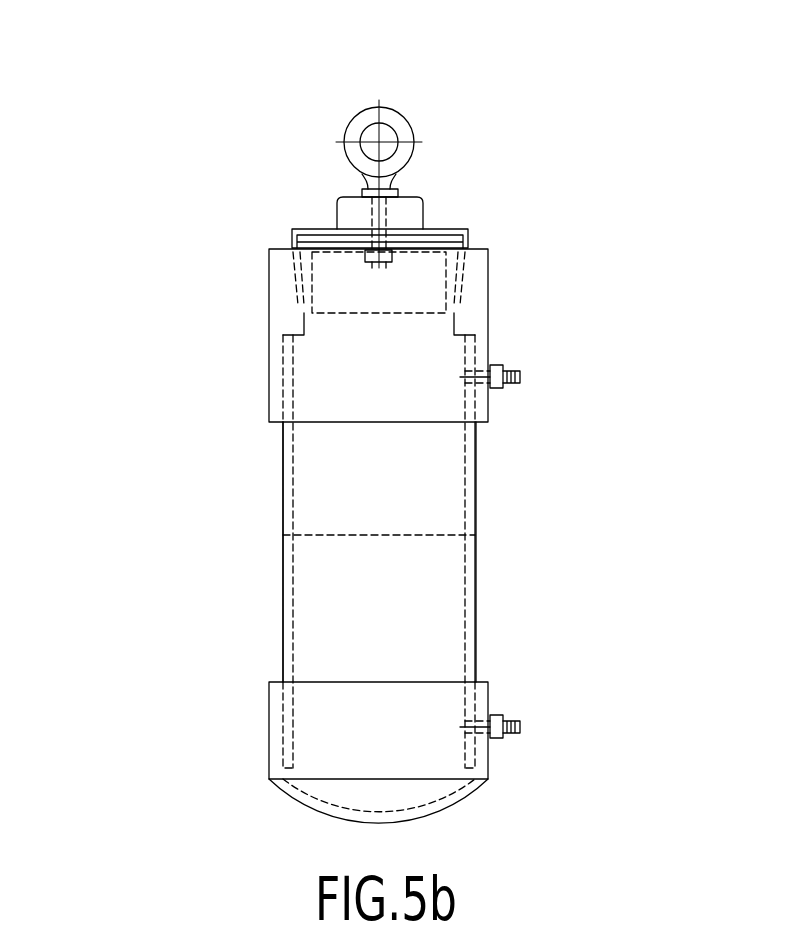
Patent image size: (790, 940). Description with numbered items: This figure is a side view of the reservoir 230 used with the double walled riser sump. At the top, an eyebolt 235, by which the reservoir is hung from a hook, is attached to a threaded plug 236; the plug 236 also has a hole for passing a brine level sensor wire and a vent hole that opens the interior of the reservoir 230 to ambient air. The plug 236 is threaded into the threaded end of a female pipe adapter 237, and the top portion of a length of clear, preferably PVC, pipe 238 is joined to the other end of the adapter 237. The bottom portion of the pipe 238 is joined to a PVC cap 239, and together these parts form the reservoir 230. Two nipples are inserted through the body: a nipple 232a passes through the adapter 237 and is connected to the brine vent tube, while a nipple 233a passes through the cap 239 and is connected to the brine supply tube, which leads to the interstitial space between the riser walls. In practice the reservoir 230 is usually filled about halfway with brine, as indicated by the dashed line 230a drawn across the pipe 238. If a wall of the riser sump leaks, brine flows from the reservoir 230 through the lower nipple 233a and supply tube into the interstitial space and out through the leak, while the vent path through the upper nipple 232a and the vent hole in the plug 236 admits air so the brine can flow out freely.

The reservoir 230 is at (252, 622).
The dashed line 230a is at (403, 535).
The nipple 232a is at (518, 385).
The nipple 233a is at (518, 735).
The eyebolt 235 is at (346, 118).
The threaded plug 236 is at (286, 232).
The female pipe adapter 237 is at (268, 337).
The clear pipe 238 is at (280, 557).
The PVC cap 239 is at (268, 737).